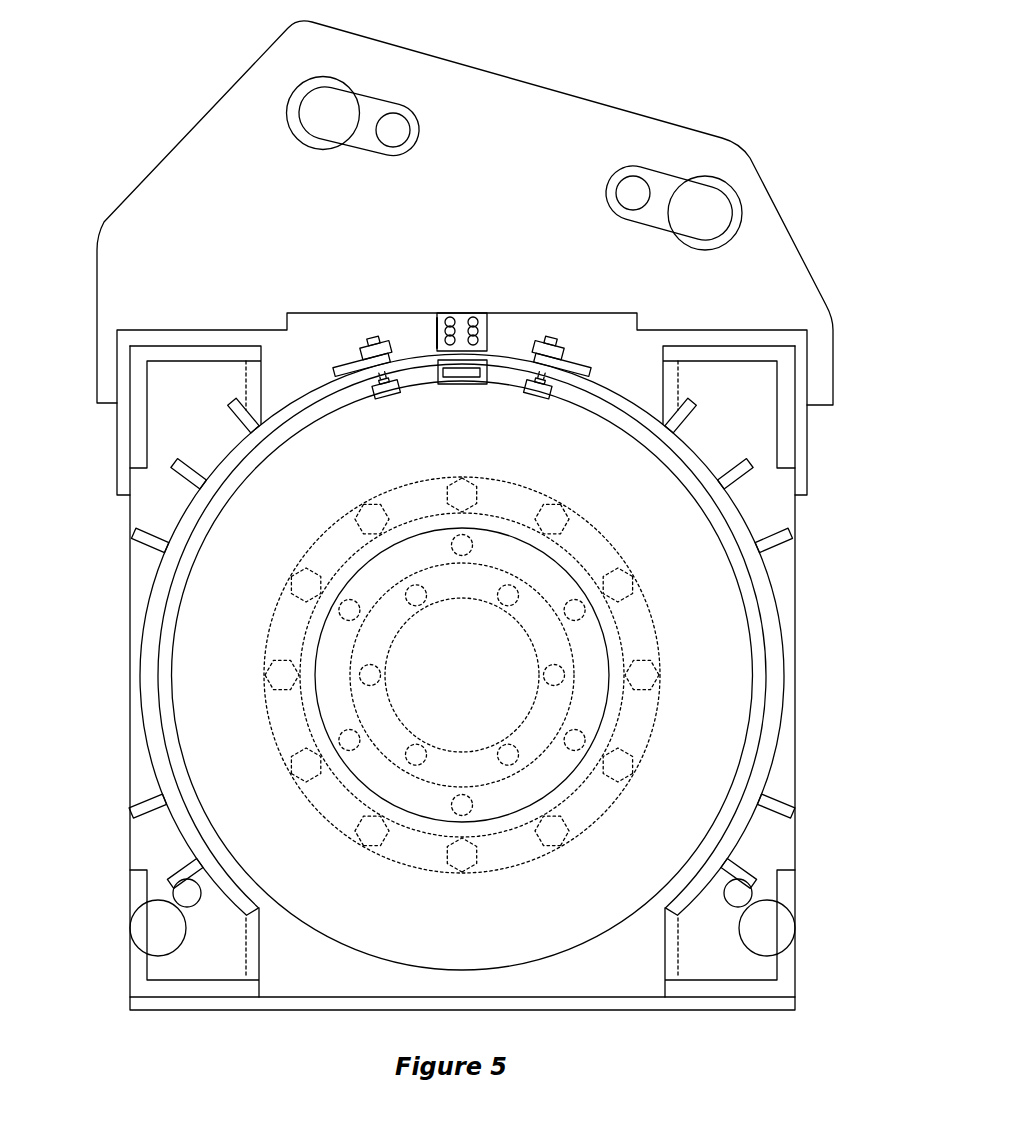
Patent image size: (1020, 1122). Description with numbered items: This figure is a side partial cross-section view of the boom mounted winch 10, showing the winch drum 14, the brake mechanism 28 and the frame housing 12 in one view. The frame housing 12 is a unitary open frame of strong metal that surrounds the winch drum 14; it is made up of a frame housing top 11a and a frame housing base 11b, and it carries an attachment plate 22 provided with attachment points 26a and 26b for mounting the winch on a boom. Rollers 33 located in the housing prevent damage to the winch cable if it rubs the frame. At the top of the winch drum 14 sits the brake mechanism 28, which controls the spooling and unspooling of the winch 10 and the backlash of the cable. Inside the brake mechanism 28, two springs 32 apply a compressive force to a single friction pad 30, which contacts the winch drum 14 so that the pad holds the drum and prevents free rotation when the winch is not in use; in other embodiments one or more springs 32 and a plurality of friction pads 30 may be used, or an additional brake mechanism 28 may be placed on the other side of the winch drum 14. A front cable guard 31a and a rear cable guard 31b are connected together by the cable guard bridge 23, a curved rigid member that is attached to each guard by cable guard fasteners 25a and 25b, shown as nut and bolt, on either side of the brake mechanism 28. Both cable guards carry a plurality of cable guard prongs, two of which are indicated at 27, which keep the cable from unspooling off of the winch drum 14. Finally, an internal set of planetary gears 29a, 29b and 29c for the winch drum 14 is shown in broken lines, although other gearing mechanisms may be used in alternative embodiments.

The winch 10 is at (858, 147).
The frame housing top 11a is at (810, 423).
The frame housing base 11b is at (800, 955).
The frame housing 12 is at (810, 467).
The winch drum 14 is at (462, 675).
The attachment plate 22 is at (205, 113).
The cable guard bridge 23 is at (505, 352).
The cable guard fastener 25a is at (557, 343).
The cable guard fastener 25b is at (365, 347).
The attachment point 26a is at (356, 119).
The attachment point 26b is at (671, 205).
The cable guard prongs 27 is at (147, 802).
The brake mechanism 28 is at (435, 322).
The planetary gear 29a is at (627, 573).
The planetary gear 29b is at (603, 645).
The planetary gear 29c is at (570, 687).
The friction pad 30 is at (462, 373).
The front cable guard 31a is at (745, 527).
The rear cable guard 31b is at (148, 527).
The springs 32 is at (450, 312).
The rollers 33 is at (462, 917).